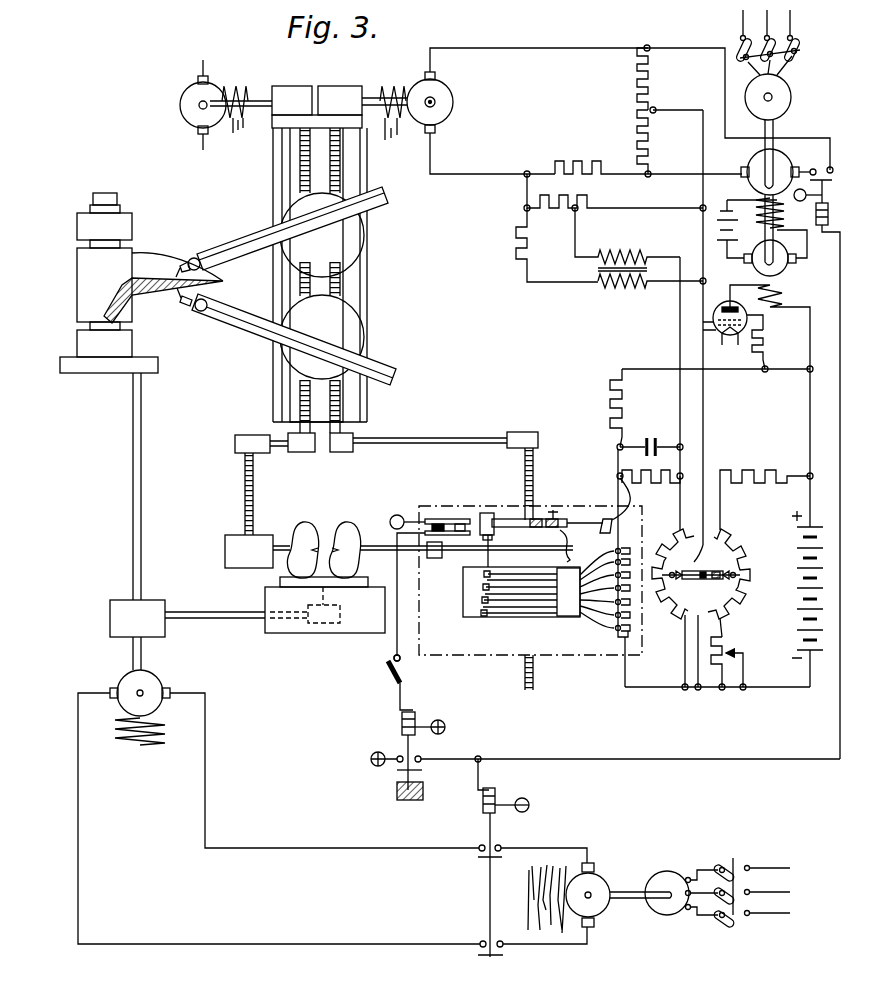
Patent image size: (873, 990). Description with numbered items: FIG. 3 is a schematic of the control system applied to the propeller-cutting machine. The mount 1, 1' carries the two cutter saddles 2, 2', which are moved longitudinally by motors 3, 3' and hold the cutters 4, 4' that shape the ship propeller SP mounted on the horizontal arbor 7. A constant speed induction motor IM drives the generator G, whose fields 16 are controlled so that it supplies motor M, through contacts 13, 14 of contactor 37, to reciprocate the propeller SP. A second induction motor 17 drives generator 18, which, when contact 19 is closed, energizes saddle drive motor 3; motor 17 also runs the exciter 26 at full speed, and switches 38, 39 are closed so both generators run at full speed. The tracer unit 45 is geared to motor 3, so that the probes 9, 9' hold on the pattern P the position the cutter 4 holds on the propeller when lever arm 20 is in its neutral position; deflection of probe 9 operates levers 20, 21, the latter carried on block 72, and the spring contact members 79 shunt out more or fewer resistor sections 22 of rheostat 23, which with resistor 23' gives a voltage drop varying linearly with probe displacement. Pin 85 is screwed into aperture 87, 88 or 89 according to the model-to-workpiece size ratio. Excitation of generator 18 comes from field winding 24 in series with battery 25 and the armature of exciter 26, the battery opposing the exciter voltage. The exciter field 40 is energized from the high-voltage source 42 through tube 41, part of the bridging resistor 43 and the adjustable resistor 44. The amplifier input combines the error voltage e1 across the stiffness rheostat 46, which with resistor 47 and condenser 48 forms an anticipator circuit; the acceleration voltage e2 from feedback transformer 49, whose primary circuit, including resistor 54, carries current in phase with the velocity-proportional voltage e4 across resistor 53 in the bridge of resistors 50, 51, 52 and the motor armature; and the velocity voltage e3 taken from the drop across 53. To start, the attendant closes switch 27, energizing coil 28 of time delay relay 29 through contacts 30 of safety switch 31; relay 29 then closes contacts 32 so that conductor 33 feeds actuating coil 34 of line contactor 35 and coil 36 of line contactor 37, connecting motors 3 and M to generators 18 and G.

The mount 1 is at (305, 254).
The frame lower part 1' is at (302, 406).
The cutter saddle 2 is at (344, 337).
The cutter saddle 2' is at (344, 235).
The saddle drive motor 3 is at (427, 106).
The saddle drive motor 3' is at (205, 105).
The suction face cutter 4 is at (285, 336).
The cutter 4' is at (269, 232).
The horizontal arbor 7 is at (117, 195).
The probe 9 is at (355, 538).
The cam 9' is at (297, 538).
The contact 13 is at (498, 846).
The contact 14 is at (484, 940).
The generator fields 16 is at (560, 935).
The induction motor 17 is at (792, 102).
The generator 18 is at (750, 160).
The contact 19 is at (815, 168).
The lever arm 20 is at (455, 553).
The lever 21 is at (505, 518).
The resistor sections 22 is at (614, 617).
The rheostat 23 is at (644, 656).
The resistor 23' is at (596, 408).
The field winding 24 is at (785, 210).
The battery 25 is at (722, 212).
The exciter 26 is at (790, 265).
The switch 27 is at (386, 672).
The coil 28 is at (416, 712).
The time delay relay 29 is at (382, 730).
The contacts 30 is at (488, 512).
The safety switch 31 is at (440, 519).
The contacts 32 is at (424, 757).
The conductor 33 is at (800, 758).
The actuating coil 34 is at (822, 228).
The line contactor 35 is at (818, 191).
The coil 36 is at (497, 790).
The line contactor 37 is at (468, 822).
The switch 38 is at (798, 60).
The switch 39 is at (730, 860).
The exciter field 40 is at (788, 297).
The tube 41 is at (727, 302).
The direct current voltage source 42 is at (800, 622).
The bridging resistor 43 is at (738, 580).
The adjustable resistor 44 is at (740, 667).
The tracer unit 45 is at (530, 644).
The stiffness adjusting rheostat 46 is at (675, 549).
The resistor 47 is at (618, 470).
The condenser 48 is at (652, 437).
The feedback transformer 49 is at (618, 287).
The resistor 50 is at (562, 163).
The resistor 51 is at (637, 132).
The resistor 52 is at (637, 92).
The resistor 53 is at (594, 209).
The resistor 54 is at (517, 252).
The block 72 is at (623, 480).
The spring contact members 79 is at (490, 618).
The pin 85 is at (606, 518).
The aperture 87 is at (560, 535).
The aperture 88 is at (556, 518).
The aperture 89 is at (537, 518).
The ship propeller SP is at (129, 307).
The pattern P is at (344, 522).
The motor M is at (176, 679).
The generator G is at (622, 939).
The induction motor IM is at (688, 943).
The voltage e1 is at (683, 686).
The voltage e2 is at (653, 240).
The voltage e3 is at (598, 237).
The voltage e4 is at (698, 193).